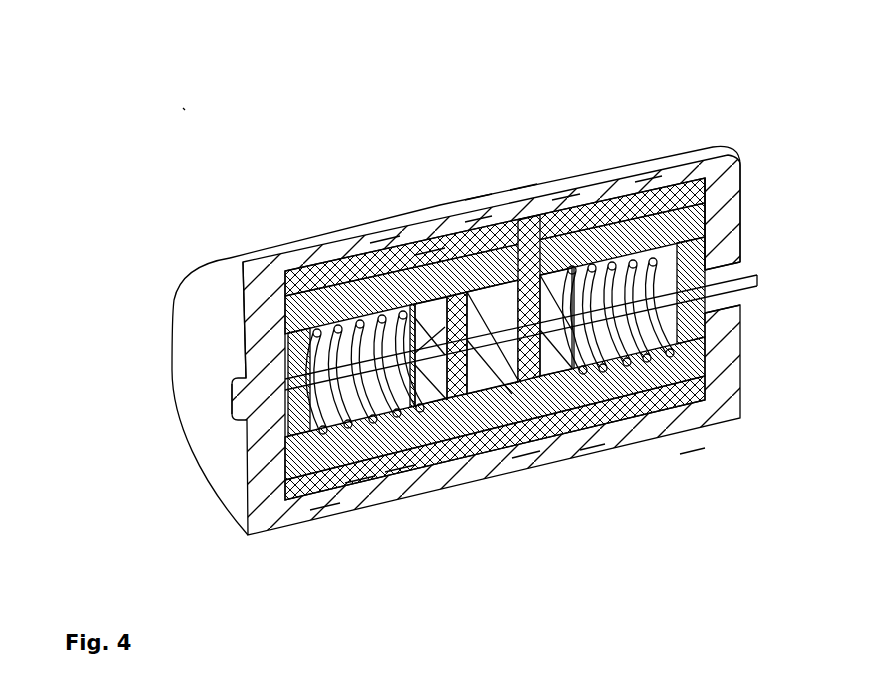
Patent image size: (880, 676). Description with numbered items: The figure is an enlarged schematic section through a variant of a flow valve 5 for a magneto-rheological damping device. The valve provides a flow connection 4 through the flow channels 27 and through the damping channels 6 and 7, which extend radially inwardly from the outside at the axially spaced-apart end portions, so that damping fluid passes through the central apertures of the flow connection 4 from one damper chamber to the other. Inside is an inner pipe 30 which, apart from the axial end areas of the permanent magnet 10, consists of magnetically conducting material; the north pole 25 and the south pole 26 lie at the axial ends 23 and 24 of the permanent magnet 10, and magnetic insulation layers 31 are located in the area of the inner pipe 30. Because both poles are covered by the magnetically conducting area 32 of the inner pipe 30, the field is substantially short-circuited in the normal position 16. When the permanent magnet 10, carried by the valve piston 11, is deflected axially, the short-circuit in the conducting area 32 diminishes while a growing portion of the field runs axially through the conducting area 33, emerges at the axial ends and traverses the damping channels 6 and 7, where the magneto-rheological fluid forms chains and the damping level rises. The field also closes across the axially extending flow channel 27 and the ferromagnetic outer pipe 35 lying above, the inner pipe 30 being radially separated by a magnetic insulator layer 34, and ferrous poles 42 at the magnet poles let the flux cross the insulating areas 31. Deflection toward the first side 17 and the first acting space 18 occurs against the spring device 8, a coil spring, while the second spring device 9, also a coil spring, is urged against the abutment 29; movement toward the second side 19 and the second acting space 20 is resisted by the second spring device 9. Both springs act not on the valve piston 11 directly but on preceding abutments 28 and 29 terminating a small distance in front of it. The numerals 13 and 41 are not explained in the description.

The flow connection 4 is at (757, 285).
The flow valve 5 is at (183, 108).
The damping channel 6 is at (246, 345).
The damping channel 7 is at (720, 218).
The spring device 8 is at (358, 478).
The second spring device 9 is at (590, 448).
The permanent magnet 10 is at (524, 455).
The valve piston 11 is at (503, 395).
The housing shell 13 is at (255, 256).
The normal position 16 is at (407, 108).
The first side 17 is at (324, 500).
The first acting space 18 is at (258, 282).
The second side 19 is at (692, 452).
The second acting space 20 is at (647, 187).
The axial end 23 is at (383, 240).
The axial end 24 is at (523, 205).
The north pole 25 is at (452, 452).
The south pole 26 is at (546, 405).
The flow channel 27 is at (687, 185).
The abutment 28 is at (399, 470).
The abutment 29 is at (565, 210).
The inner pipe 30 is at (323, 290).
The magnetic insulation layer 31 is at (471, 445).
The magnetically conducting area 32 is at (478, 203).
The conducting area 33 is at (357, 283).
The magnetic insulator layer 34 is at (427, 250).
The outer pipe 35 is at (480, 197).
The armature 41 is at (497, 341).
The ferrous pole 42 is at (434, 455).